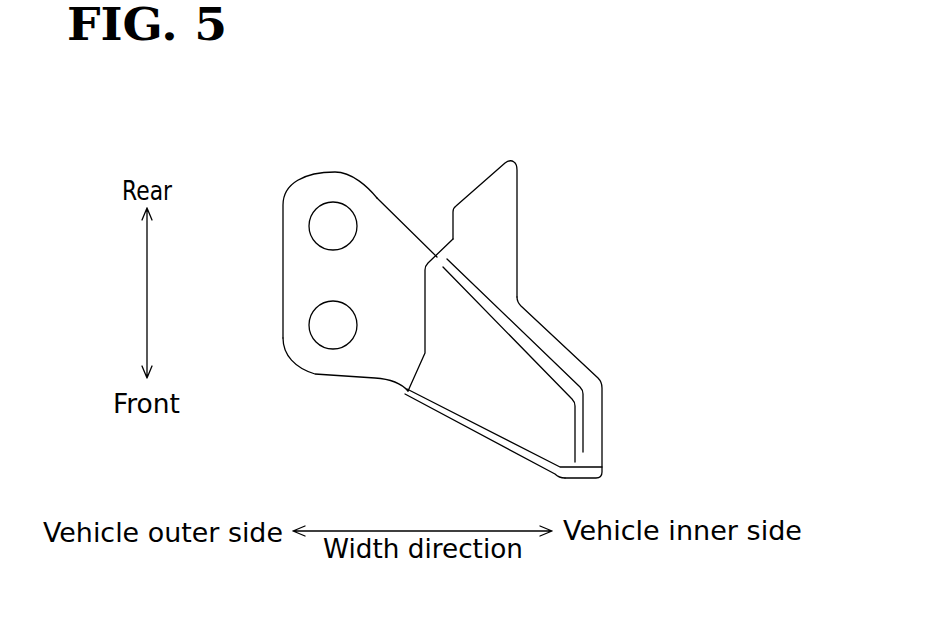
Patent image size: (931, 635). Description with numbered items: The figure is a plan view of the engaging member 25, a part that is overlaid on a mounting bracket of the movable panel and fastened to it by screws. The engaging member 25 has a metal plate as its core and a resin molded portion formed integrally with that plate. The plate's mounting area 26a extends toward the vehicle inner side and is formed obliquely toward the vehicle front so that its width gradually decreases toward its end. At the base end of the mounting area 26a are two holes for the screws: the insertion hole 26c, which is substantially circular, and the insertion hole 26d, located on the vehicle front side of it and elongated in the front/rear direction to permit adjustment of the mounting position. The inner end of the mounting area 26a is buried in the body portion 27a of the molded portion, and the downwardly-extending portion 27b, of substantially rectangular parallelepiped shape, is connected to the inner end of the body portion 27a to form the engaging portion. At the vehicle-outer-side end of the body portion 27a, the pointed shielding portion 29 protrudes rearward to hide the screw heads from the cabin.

The engaging member 25 is at (608, 145).
The mounting area 26a is at (395, 226).
The insertion hole 26c is at (315, 226).
The insertion hole 26d is at (313, 318).
The shielding portion 29 is at (517, 219).
The body portion 27a is at (485, 428).
The downwardly-extending portion 27b is at (603, 425).